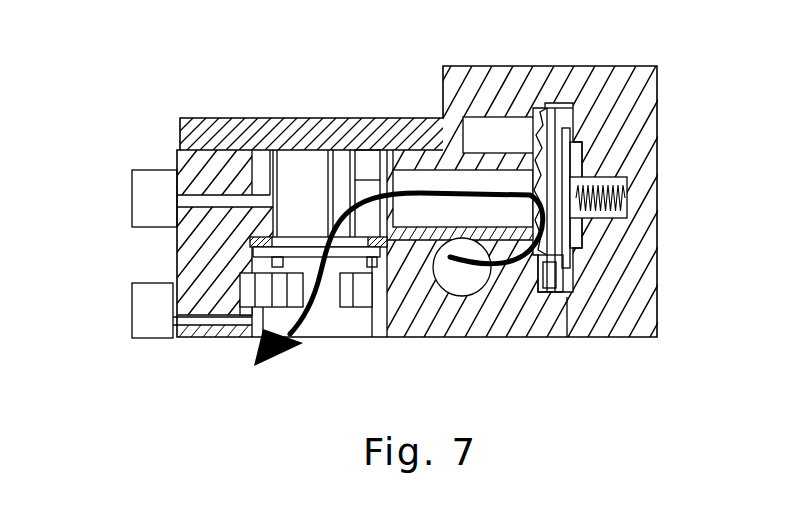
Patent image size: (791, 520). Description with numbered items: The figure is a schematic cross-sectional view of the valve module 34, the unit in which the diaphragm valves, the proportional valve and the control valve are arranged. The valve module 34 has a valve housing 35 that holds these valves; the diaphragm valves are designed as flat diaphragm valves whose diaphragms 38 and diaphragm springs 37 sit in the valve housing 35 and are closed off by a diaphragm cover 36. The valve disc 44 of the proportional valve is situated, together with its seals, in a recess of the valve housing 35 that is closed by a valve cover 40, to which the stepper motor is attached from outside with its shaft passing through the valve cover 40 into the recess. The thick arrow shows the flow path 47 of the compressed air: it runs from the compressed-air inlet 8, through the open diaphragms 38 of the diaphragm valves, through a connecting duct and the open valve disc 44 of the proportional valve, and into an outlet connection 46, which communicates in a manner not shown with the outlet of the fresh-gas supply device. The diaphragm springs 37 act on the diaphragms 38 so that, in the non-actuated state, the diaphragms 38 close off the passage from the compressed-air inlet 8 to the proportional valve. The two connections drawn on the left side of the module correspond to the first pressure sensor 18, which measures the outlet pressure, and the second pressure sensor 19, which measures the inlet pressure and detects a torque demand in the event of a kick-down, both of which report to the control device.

The compressed-air inlet 8 is at (475, 273).
The first pressure sensor 18 is at (148, 322).
The second pressure sensor 19 is at (147, 197).
The valve module 34 is at (200, 96).
The valve housing 35 is at (197, 327).
The diaphragm cover 36 is at (618, 325).
The diaphragm spring 37 is at (598, 160).
The diaphragm 38 is at (558, 126).
The valve cover 40 is at (325, 132).
The valve disc 44 is at (303, 237).
The outlet connection 46 is at (380, 235).
The flow path 47 is at (493, 265).